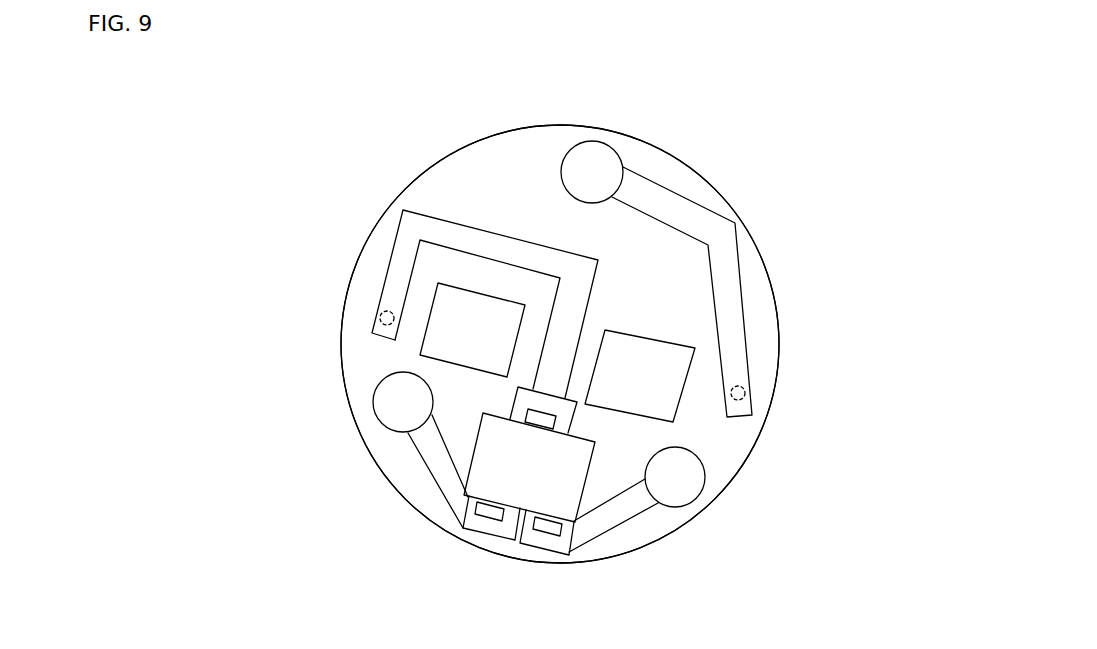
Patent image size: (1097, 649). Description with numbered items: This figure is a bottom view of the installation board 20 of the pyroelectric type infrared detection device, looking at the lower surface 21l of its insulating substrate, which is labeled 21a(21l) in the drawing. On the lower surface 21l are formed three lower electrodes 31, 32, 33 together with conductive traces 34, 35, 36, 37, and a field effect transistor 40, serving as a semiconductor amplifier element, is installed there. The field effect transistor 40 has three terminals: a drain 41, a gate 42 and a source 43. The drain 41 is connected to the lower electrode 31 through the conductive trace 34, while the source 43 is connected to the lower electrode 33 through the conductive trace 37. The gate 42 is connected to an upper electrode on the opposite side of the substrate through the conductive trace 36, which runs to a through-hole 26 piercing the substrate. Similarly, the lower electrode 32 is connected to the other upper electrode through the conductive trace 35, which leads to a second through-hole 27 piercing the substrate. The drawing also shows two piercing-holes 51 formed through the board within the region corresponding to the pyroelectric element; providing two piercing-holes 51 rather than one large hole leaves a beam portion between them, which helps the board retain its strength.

The installation board 20 is at (762, 197).
The substrate (board) 21a is at (457, 168).
The lower surface 21l is at (560, 344).
The through-hole 26 is at (380, 318).
The through-hole 27 is at (745, 393).
The lower electrode 31 is at (695, 482).
The lower electrode 32 is at (591, 170).
The lower electrode 33 is at (388, 408).
The conductive trace 34 is at (597, 510).
The conductive trace 35 is at (727, 272).
The conductive trace 36 is at (588, 264).
The conductive trace 37 is at (438, 470).
The field effect transistor 40 is at (543, 492).
The drain 41 is at (548, 522).
The gate 42 is at (545, 416).
The source 43 is at (492, 510).
The piercing-hole 51 is at (495, 310).